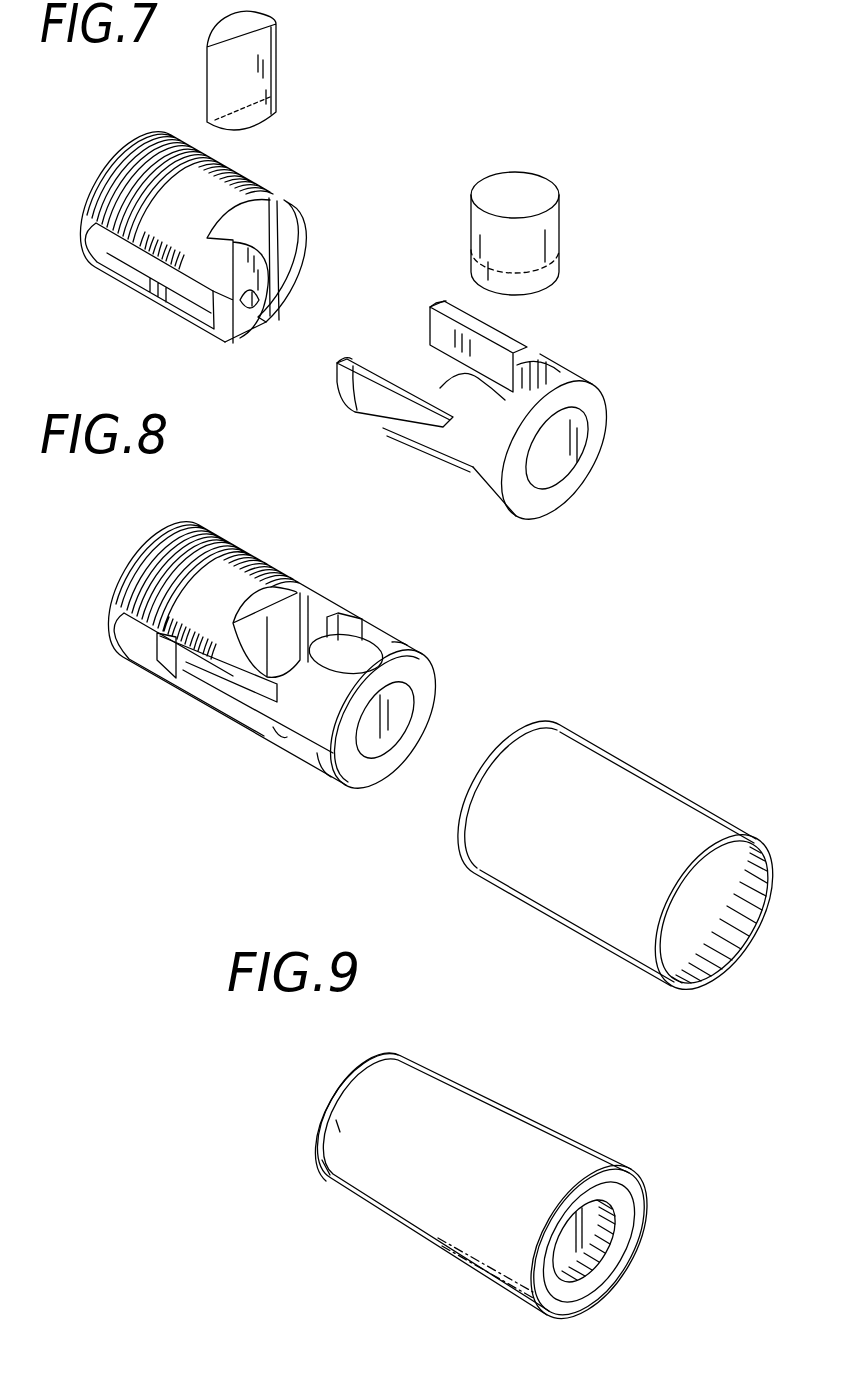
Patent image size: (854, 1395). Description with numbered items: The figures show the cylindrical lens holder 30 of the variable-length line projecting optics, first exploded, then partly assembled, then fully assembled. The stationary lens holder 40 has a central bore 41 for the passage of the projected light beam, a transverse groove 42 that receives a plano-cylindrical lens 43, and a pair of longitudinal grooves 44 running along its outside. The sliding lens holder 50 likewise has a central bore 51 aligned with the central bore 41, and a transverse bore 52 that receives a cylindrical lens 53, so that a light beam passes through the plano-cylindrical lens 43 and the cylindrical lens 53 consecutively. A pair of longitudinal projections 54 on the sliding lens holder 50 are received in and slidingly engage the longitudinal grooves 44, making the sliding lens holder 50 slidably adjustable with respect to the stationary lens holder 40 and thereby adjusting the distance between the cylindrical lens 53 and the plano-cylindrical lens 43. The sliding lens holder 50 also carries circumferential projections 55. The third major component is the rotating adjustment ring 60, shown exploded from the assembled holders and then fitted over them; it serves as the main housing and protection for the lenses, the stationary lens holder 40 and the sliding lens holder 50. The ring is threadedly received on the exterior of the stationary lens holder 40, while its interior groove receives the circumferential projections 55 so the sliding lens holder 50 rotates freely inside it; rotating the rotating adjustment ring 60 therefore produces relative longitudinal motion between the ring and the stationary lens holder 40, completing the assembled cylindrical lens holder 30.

In FIG. 9, the cylindrical lens holder 30 is at (485, 1187).
In FIG. 7, the stationary lens holder 40 is at (137, 148).
In FIG. 8, the stationary lens holder 40 is at (140, 553).
In FIG. 9, the stationary lens holder 40 is at (357, 1078).
In FIG. 7, the central bore 41 is at (250, 324).
In FIG. 7, the transverse groove 42 is at (284, 222).
In FIG. 7, the plano-cylindrical lens 43 is at (284, 80).
In FIG. 8, the plano-cylindrical lens 43 is at (297, 592).
In FIG. 7, the longitudinal grooves 44 is at (132, 276).
In FIG. 8, the longitudinal grooves 44 is at (143, 634).
In FIG. 7, the sliding lens holder 50 is at (484, 476).
In FIG. 8, the sliding lens holder 50 is at (313, 748).
In FIG. 9, the sliding lens holder 50 is at (588, 1278).
In FIG. 7, the central bore 51 is at (579, 452).
In FIG. 7, the transverse bore 52 is at (550, 372).
In FIG. 7, the cylindrical lens 53 is at (476, 228).
In FIG. 8, the cylindrical lens 53 is at (360, 648).
In FIG. 7, the longitudinal projections 54 is at (503, 344).
In FIG. 8, the longitudinal projections 54 is at (222, 688).
In FIG. 7, the circumferential projections 55 is at (458, 307).
In FIG. 8, the rotating adjustment ring 60 is at (567, 732).
In FIG. 9, the rotating adjustment ring 60 is at (420, 1233).